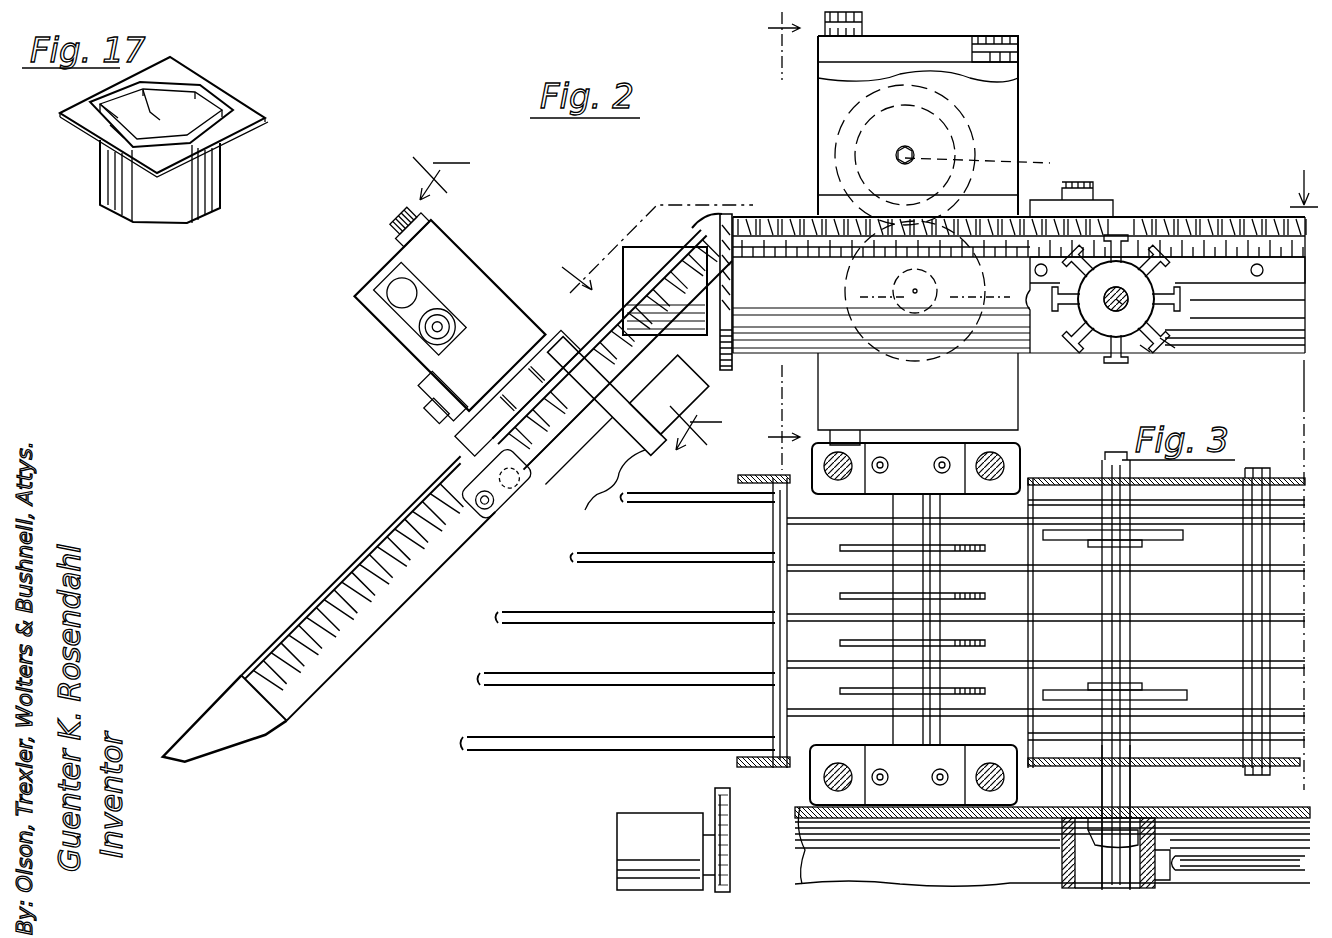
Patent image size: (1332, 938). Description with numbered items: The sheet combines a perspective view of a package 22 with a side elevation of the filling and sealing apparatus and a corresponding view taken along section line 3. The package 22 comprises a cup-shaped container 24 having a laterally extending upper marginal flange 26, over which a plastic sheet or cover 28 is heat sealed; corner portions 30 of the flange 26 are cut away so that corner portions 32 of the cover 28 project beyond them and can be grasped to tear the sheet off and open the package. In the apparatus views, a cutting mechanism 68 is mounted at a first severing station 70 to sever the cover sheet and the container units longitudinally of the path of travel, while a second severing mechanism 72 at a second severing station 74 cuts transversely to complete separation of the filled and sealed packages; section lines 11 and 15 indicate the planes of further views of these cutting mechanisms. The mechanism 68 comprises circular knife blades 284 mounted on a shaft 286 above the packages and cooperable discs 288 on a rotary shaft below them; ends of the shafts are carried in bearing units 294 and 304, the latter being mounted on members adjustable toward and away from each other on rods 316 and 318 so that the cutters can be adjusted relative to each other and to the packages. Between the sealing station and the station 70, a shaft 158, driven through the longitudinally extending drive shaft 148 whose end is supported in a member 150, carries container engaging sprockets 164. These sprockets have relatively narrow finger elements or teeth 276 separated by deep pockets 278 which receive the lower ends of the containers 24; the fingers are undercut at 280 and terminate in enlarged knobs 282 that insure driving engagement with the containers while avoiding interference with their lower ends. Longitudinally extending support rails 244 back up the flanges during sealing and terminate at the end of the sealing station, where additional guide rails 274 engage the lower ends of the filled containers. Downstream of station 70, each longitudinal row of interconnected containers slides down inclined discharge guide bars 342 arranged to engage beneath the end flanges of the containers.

In FIG. 17, the package 22 is at (180, 124).
In FIG. 17, the cup-shaped container 24 is at (213, 165).
In FIG. 2, the cup-shaped container 24 is at (1228, 232).
In FIG. 17, the upper marginal flange 26 is at (228, 138).
In FIG. 17, the cover sheet 28 is at (118, 118).
In FIG. 17, the corner portions of the container flange 30 is at (170, 78).
In FIG. 17, the corner portions of the cover sheet 32 is at (75, 115).
In FIG. 2, the cutting mechanism 68 is at (1035, 138).
In FIG. 2, the first severing station 70 is at (953, 326).
In FIG. 2, the severing mechanism 72 is at (518, 282).
In FIG. 2, the second severing station 74 is at (552, 444).
In FIG. 2, the section line 3– 3 is at (939, 469).
In FIG. 2, the section line 11– 11 is at (760, 449).
In FIG. 2, the section line 15 is at (567, 296).
In FIG. 3, the drive shaft 148 is at (1230, 858).
In FIG. 3, the support member 150 is at (1160, 848).
In FIG. 2, the shaft 158 is at (1100, 330).
In FIG. 3, the shaft 158 is at (1115, 792).
In FIG. 2, the container engaging sprockets 164 is at (1112, 310).
In FIG. 3, the container engaging sprockets 164 is at (1155, 540).
In FIG. 3, the support rails 244 is at (1252, 665).
In FIG. 3, the guide rails 274 is at (1212, 575).
In FIG. 2, the finger elements 276 is at (1180, 310).
In FIG. 2, the pockets 278 is at (1170, 275).
In FIG. 2, the undercut 280 is at (1130, 350).
In FIG. 2, the enlarged knobs 282 is at (1165, 345).
In FIG. 2, the circular knife blades 284 is at (850, 158).
In FIG. 2, the shaft 286 is at (1003, 162).
In FIG. 3, the cooperable discs 288 is at (866, 553).
In FIG. 3, the bearing unit 294 is at (895, 506).
In FIG. 3, the bearing unit 304 is at (905, 734).
In FIG. 3, the rod 316 is at (826, 780).
In FIG. 3, the rod 318 is at (1000, 466).
In FIG. 2, the discharge guide bars 342 is at (318, 673).
In FIG. 3, the discharge guide bars 342 is at (572, 686).